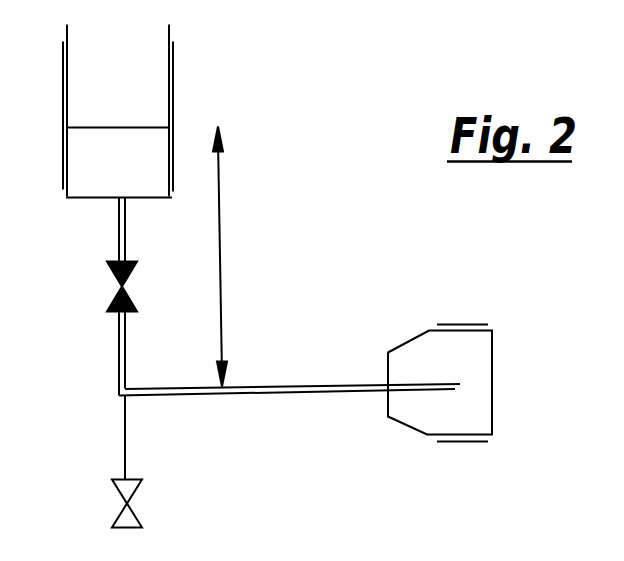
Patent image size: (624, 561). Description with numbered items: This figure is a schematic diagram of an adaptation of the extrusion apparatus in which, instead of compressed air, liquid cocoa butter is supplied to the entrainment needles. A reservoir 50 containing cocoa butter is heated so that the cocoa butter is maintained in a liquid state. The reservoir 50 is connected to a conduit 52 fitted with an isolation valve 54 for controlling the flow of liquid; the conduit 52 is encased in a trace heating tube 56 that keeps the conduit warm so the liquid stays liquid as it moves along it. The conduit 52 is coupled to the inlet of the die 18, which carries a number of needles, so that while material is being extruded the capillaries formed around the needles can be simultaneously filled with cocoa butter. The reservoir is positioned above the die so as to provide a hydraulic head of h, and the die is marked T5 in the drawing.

The die 18 is at (414, 342).
The reservoir 50 is at (165, 62).
The conduit 52 is at (119, 348).
The isolation valve 54 is at (102, 270).
The trace heating tube 56 is at (280, 386).
The tank T5 is at (453, 436).
The hydraulic head h is at (230, 257).